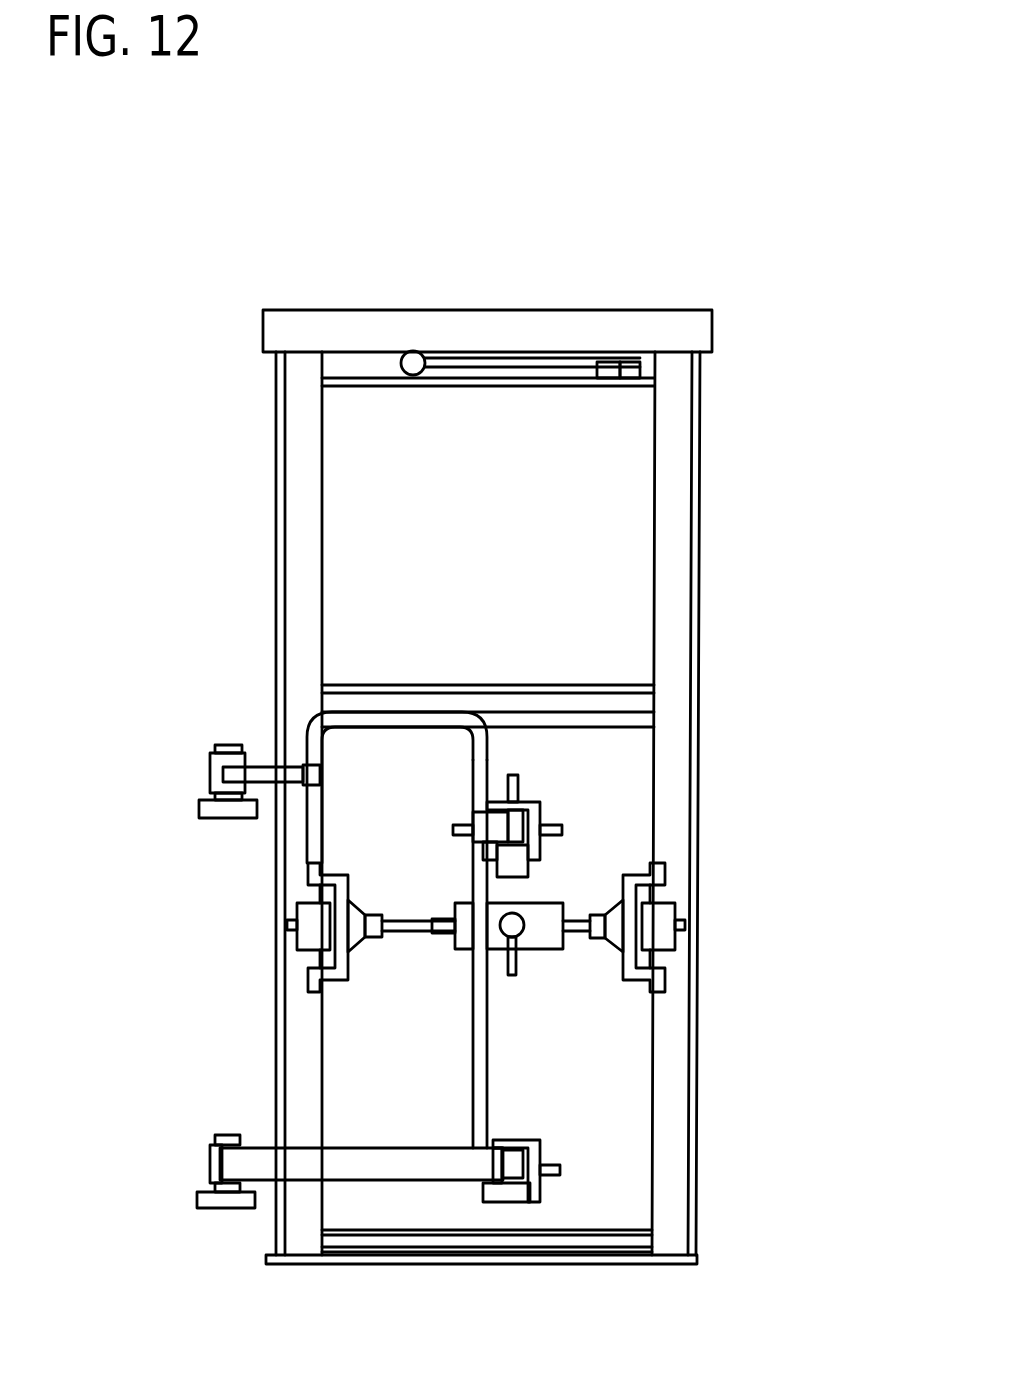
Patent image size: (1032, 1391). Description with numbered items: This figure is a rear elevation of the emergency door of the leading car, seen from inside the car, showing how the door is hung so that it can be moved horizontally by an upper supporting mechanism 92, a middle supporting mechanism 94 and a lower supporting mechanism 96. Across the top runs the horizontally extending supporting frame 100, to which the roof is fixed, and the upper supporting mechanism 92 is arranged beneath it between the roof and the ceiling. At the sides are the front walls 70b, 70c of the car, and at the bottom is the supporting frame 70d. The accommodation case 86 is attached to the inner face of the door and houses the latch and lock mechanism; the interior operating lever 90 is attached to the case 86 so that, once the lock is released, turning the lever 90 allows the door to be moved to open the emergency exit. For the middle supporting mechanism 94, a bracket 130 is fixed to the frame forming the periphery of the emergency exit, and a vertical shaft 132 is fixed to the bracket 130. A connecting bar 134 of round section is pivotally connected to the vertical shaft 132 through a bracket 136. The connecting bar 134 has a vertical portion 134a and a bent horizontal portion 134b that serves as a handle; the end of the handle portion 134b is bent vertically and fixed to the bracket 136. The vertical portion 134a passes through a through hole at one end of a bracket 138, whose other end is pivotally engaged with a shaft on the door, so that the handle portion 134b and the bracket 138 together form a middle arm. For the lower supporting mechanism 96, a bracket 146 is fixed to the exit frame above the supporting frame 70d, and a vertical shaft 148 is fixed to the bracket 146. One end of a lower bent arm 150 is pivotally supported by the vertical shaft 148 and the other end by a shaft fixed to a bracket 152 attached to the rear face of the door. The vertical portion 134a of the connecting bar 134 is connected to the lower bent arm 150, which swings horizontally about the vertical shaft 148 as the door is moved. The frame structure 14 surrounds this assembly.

The frame 14 is at (610, 480).
The front right wall 70b is at (732, 420).
The front left wall 70c is at (232, 440).
The supporting frame 70d is at (637, 1257).
The supporting frame 100 is at (363, 328).
The upper supporting mechanism 92 is at (528, 330).
The connecting bar 134 is at (397, 875).
The vertical portion 134a is at (470, 1023).
The horizontal portion 134b is at (405, 712).
The bracket 136 is at (262, 773).
The vertical shaft 132 is at (222, 745).
The bracket 130 is at (200, 808).
The accommodation case 86 is at (565, 900).
The interior operating lever 90 is at (510, 975).
The middle supporting mechanism 94 is at (590, 816).
The bracket 138 is at (468, 833).
The lower bent arm 150 is at (378, 1172).
The vertical shaft 148 is at (213, 1137).
The bracket 146 is at (210, 1210).
The bracket 152 is at (510, 1180).
The lower supporting mechanism 96 is at (590, 1167).